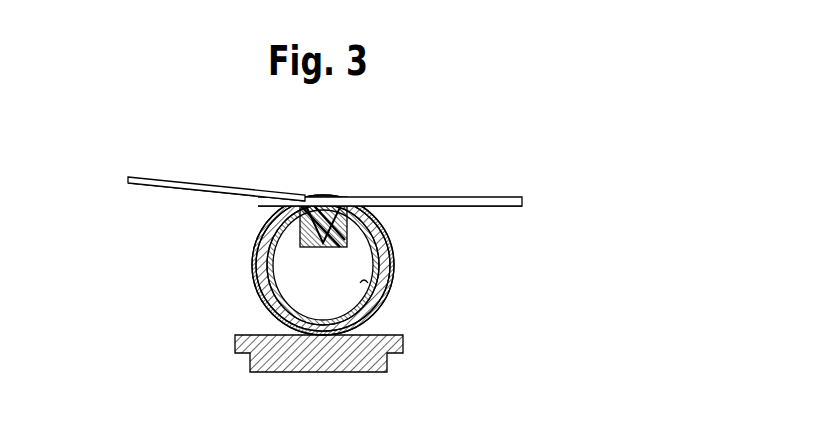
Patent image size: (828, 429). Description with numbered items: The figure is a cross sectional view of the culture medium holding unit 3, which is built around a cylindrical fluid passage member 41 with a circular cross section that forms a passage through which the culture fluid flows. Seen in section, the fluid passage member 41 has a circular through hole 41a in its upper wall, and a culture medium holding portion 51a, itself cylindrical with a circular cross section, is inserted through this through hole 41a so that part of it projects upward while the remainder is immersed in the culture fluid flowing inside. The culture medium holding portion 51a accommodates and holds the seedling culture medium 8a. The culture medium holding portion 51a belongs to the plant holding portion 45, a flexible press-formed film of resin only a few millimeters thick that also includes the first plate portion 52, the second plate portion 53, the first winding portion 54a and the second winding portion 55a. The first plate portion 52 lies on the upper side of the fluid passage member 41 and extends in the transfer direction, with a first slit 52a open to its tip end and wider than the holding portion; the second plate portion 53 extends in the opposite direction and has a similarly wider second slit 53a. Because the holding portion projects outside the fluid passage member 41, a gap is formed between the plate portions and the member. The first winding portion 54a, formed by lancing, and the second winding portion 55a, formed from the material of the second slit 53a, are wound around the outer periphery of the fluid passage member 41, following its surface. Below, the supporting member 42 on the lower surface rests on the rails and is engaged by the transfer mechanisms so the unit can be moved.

The culture medium holding unit 3 is at (253, 184).
The seedling culture medium 8a is at (327, 196).
The fluid passage member 41 is at (378, 300).
The through hole 41a is at (322, 246).
The supporting member 42 is at (372, 372).
The plant holding portion 45 is at (516, 197).
The culture medium holding portion 51a is at (395, 217).
The first plate portion 52 is at (437, 197).
The first slit 52a is at (478, 206).
The second plate portion 53 is at (166, 181).
The second slit 53a is at (188, 191).
The first winding portion 54a is at (391, 275).
The second winding portion 55a is at (273, 313).